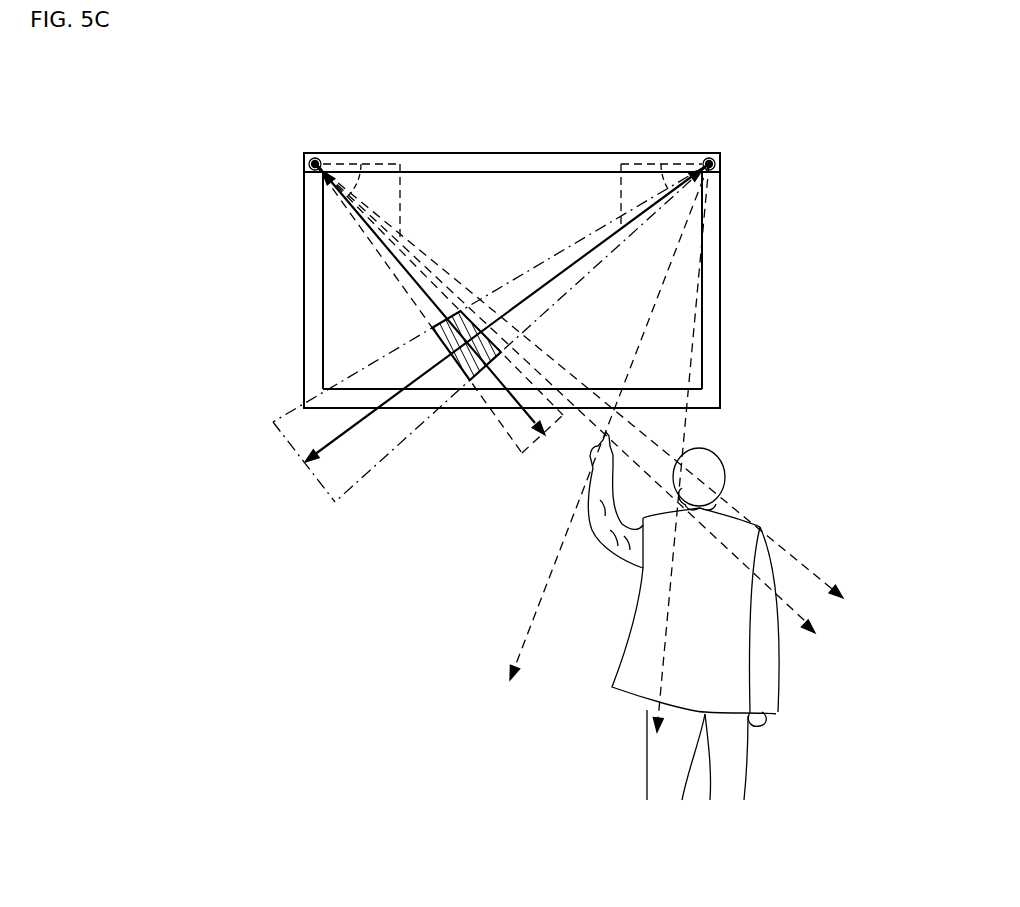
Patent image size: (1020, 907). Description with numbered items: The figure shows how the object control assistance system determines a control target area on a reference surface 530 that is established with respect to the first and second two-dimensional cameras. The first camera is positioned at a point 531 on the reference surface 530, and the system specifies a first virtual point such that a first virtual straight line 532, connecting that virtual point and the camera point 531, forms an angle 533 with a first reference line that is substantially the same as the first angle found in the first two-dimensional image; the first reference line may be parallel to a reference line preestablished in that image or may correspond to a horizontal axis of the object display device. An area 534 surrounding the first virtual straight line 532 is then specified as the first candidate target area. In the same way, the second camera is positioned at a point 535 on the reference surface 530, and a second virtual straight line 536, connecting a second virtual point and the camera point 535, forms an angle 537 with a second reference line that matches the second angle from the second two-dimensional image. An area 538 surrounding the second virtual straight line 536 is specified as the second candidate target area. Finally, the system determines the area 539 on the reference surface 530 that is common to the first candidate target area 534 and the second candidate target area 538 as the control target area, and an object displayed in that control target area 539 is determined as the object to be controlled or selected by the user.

The reference surface 530 is at (303, 337).
The point where the first two-dimensional camera is positioned 531 is at (303, 161).
The first virtual straight line 532 is at (450, 320).
The angle 533 is at (398, 187).
The area surrounding the first virtual straight line 534 is at (393, 262).
The point where the second two-dimensional camera is positioned 535 is at (722, 158).
The second virtual straight line 536 is at (480, 333).
The angle 537 is at (630, 164).
The area surrounding the second virtual straight line 538 is at (612, 254).
The control target area 539 is at (470, 383).